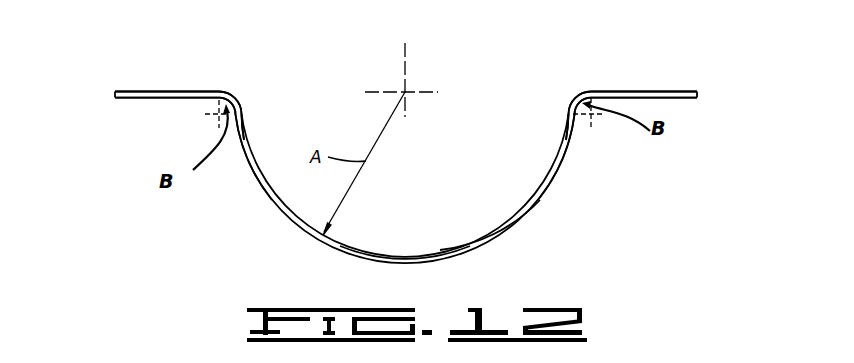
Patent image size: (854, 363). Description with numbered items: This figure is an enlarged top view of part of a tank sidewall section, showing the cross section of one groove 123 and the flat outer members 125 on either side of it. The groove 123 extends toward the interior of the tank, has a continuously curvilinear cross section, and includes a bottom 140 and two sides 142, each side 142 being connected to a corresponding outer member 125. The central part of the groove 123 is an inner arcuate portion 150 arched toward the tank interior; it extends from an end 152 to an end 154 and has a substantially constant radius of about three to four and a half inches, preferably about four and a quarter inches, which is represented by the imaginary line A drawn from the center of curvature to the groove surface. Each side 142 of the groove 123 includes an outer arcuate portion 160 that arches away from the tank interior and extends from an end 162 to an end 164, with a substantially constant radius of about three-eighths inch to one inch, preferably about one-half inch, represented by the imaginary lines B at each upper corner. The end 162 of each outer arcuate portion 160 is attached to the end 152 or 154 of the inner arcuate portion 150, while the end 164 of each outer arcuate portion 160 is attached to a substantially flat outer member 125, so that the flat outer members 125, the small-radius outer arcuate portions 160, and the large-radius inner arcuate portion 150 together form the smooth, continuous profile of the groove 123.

The groove 123 is at (423, 172).
The outer member 125 is at (128, 91).
The bottom 140 is at (383, 258).
The side 142 is at (252, 152).
The inner arcuate portion 150 is at (515, 215).
The end 152 is at (240, 113).
The end 154 is at (572, 110).
The outer arcuate portion 160 is at (237, 107).
The end 162 is at (240, 110).
The end 164 is at (217, 90).